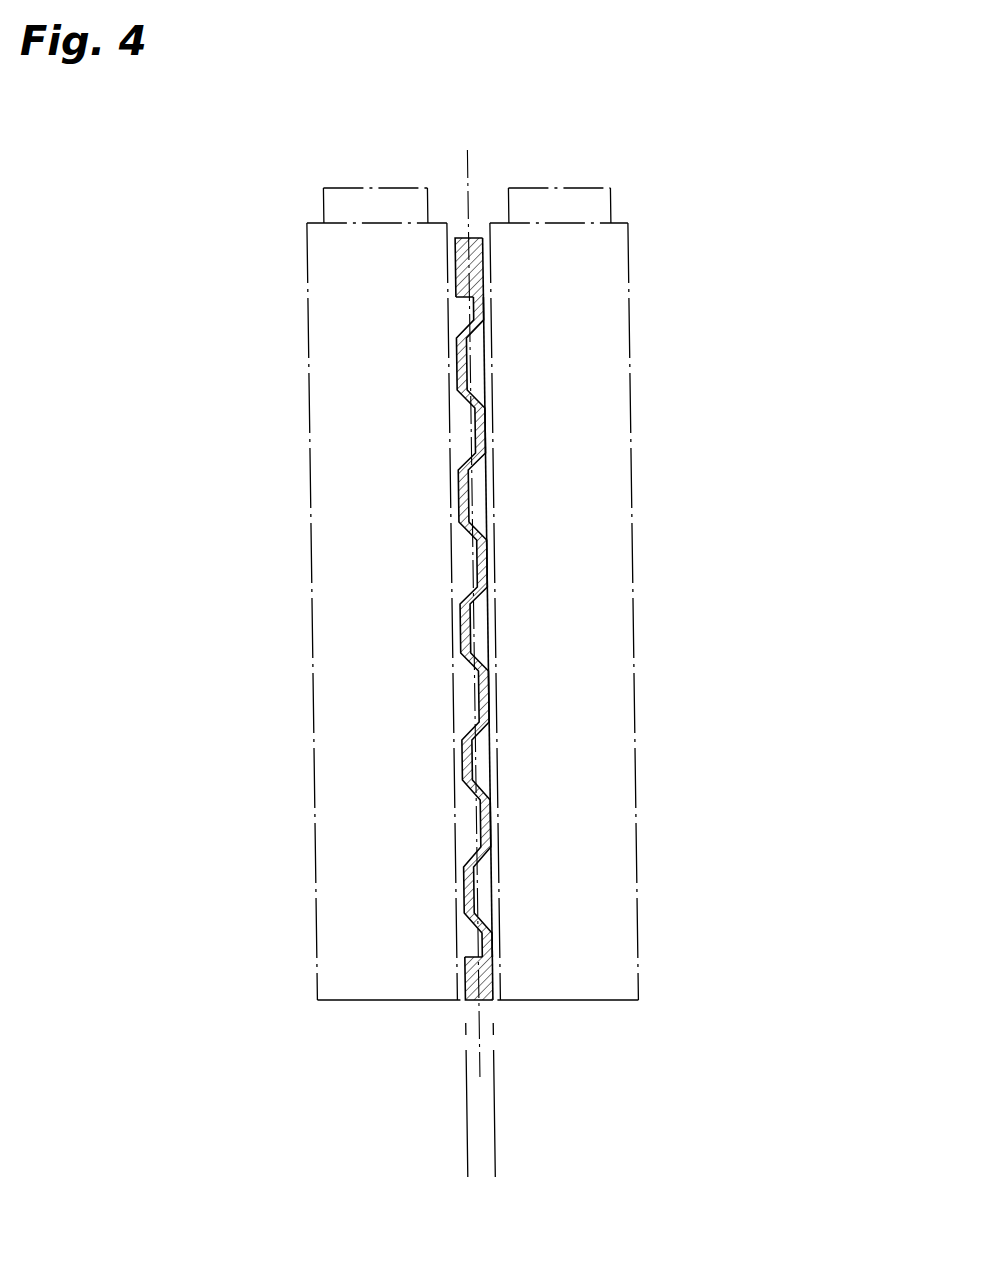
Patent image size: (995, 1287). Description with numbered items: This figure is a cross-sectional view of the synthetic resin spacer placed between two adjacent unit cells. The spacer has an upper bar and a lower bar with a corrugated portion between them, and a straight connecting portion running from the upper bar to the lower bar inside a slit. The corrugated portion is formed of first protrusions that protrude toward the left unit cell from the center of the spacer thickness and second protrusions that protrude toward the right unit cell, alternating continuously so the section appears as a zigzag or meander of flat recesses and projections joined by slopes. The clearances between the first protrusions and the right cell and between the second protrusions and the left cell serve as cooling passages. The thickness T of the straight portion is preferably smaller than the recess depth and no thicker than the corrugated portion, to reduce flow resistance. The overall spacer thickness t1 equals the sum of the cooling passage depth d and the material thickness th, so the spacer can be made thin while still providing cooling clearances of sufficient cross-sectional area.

The thickness of the straight portions T is at (440, 362).
The material thickness th is at (398, 776).
The depth of the cooling passages d is at (400, 892).
The thickness of the spacer t1 is at (432, 1110).